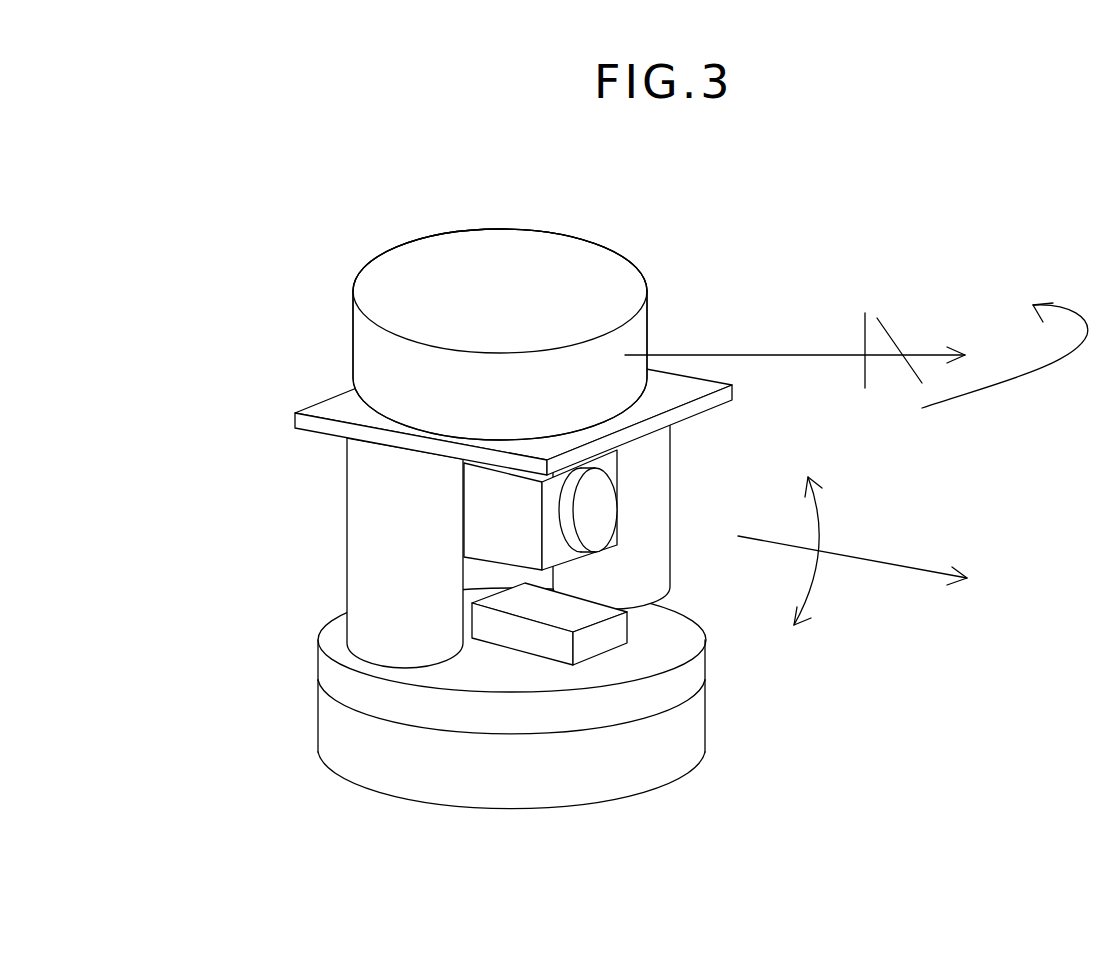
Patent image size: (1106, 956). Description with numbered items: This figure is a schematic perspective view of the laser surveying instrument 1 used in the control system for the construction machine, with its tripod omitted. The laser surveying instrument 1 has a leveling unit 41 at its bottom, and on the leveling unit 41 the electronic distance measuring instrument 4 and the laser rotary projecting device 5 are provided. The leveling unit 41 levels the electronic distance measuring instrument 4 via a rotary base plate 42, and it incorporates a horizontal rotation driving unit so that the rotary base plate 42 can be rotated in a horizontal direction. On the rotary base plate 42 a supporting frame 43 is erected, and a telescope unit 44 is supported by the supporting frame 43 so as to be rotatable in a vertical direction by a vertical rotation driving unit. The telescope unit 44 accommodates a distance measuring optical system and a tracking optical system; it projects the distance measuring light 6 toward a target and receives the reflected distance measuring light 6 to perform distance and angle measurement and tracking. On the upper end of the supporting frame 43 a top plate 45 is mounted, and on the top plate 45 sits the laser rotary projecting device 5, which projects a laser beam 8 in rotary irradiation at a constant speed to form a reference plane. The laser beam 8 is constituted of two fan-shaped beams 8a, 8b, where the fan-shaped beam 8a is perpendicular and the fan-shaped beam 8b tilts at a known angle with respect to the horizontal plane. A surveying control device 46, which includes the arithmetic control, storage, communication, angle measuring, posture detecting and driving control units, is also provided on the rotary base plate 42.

The laser surveying instrument 1 is at (587, 243).
The electronic distance measuring instrument 4 is at (325, 513).
The laser rotary projecting device 5 is at (637, 270).
The distance measuring light 6 is at (883, 562).
The laser beam 8 is at (807, 352).
The fan-shaped beam 8a is at (865, 372).
The fan-shaped beam 8b is at (885, 328).
The leveling unit 41 is at (708, 718).
The rotary base plate 42 is at (407, 705).
The supporting frame 43 is at (670, 517).
The telescope unit 44 is at (488, 512).
The top plate 45 is at (312, 410).
The surveying control device 46 is at (627, 625).